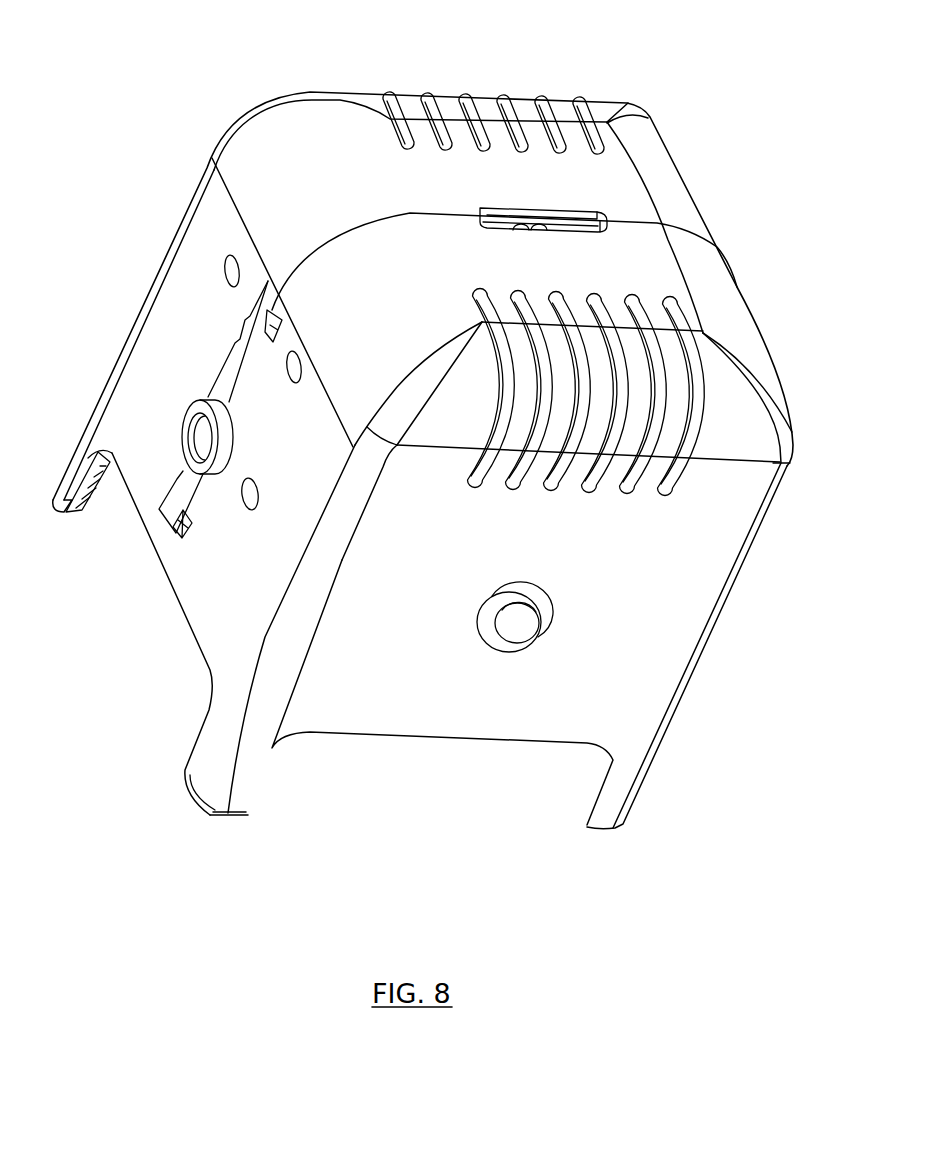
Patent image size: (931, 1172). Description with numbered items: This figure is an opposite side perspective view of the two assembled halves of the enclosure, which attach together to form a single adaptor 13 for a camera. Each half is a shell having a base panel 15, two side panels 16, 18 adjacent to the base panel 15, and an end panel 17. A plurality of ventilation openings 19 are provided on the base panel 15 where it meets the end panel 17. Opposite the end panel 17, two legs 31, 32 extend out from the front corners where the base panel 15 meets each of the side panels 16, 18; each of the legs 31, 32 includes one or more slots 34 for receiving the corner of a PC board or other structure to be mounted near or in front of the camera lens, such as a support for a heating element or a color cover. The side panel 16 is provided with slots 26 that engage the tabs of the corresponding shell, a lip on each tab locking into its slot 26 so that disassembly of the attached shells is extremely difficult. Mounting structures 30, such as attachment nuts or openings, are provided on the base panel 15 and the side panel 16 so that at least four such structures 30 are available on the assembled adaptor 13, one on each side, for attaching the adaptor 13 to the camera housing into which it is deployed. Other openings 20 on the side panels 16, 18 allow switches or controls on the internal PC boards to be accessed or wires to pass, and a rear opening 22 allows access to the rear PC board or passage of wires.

The adaptor 13 is at (690, 144).
The base panel 15 is at (673, 572).
The side panel 16 is at (215, 620).
The end panel 17 is at (425, 140).
The side panel 18 is at (160, 328).
The ventilation openings 19 is at (507, 109).
The openings 20 is at (225, 268).
The rear opening 22 is at (579, 220).
The slots 26 is at (183, 526).
The mounting structures 30 is at (198, 437).
The leg 31 is at (222, 782).
The leg 32 is at (77, 470).
The slots 34 is at (84, 498).